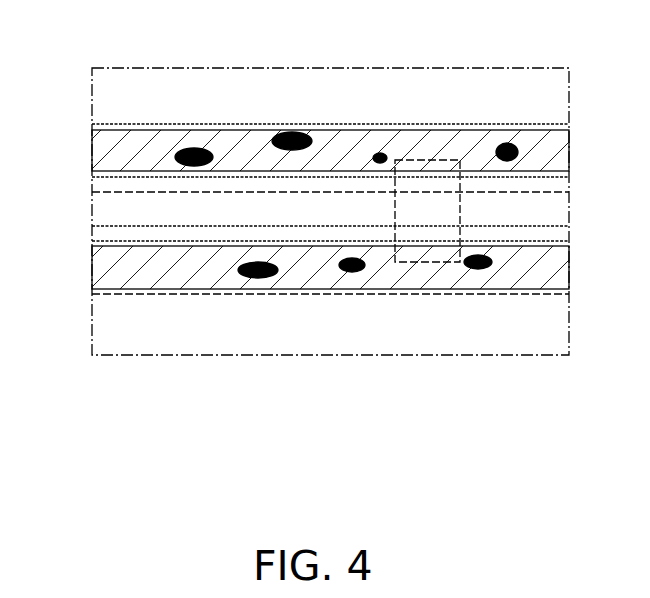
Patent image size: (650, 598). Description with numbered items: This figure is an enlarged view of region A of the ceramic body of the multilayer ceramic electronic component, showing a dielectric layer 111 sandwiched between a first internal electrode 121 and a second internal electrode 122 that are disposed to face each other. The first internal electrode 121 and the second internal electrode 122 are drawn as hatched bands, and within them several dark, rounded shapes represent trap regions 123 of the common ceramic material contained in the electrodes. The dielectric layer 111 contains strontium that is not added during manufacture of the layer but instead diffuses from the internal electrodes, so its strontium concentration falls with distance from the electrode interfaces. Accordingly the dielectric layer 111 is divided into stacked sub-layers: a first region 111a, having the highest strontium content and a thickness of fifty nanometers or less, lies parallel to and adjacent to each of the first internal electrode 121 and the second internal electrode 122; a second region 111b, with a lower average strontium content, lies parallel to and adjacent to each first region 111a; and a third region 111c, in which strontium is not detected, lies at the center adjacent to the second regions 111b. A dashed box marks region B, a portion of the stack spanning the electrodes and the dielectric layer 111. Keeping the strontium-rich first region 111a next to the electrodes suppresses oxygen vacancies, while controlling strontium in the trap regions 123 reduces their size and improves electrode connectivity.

The region A is at (325, 415).
The region B is at (413, 160).
The dielectric layer 111 is at (326, 214).
The first region 111a is at (92, 176).
The second region 111b is at (92, 190).
The third region 111c is at (92, 210).
The first internal electrode 121 is at (566, 134).
The second internal electrode 122 is at (566, 263).
The trap region of common ceramic material 123 is at (507, 143).